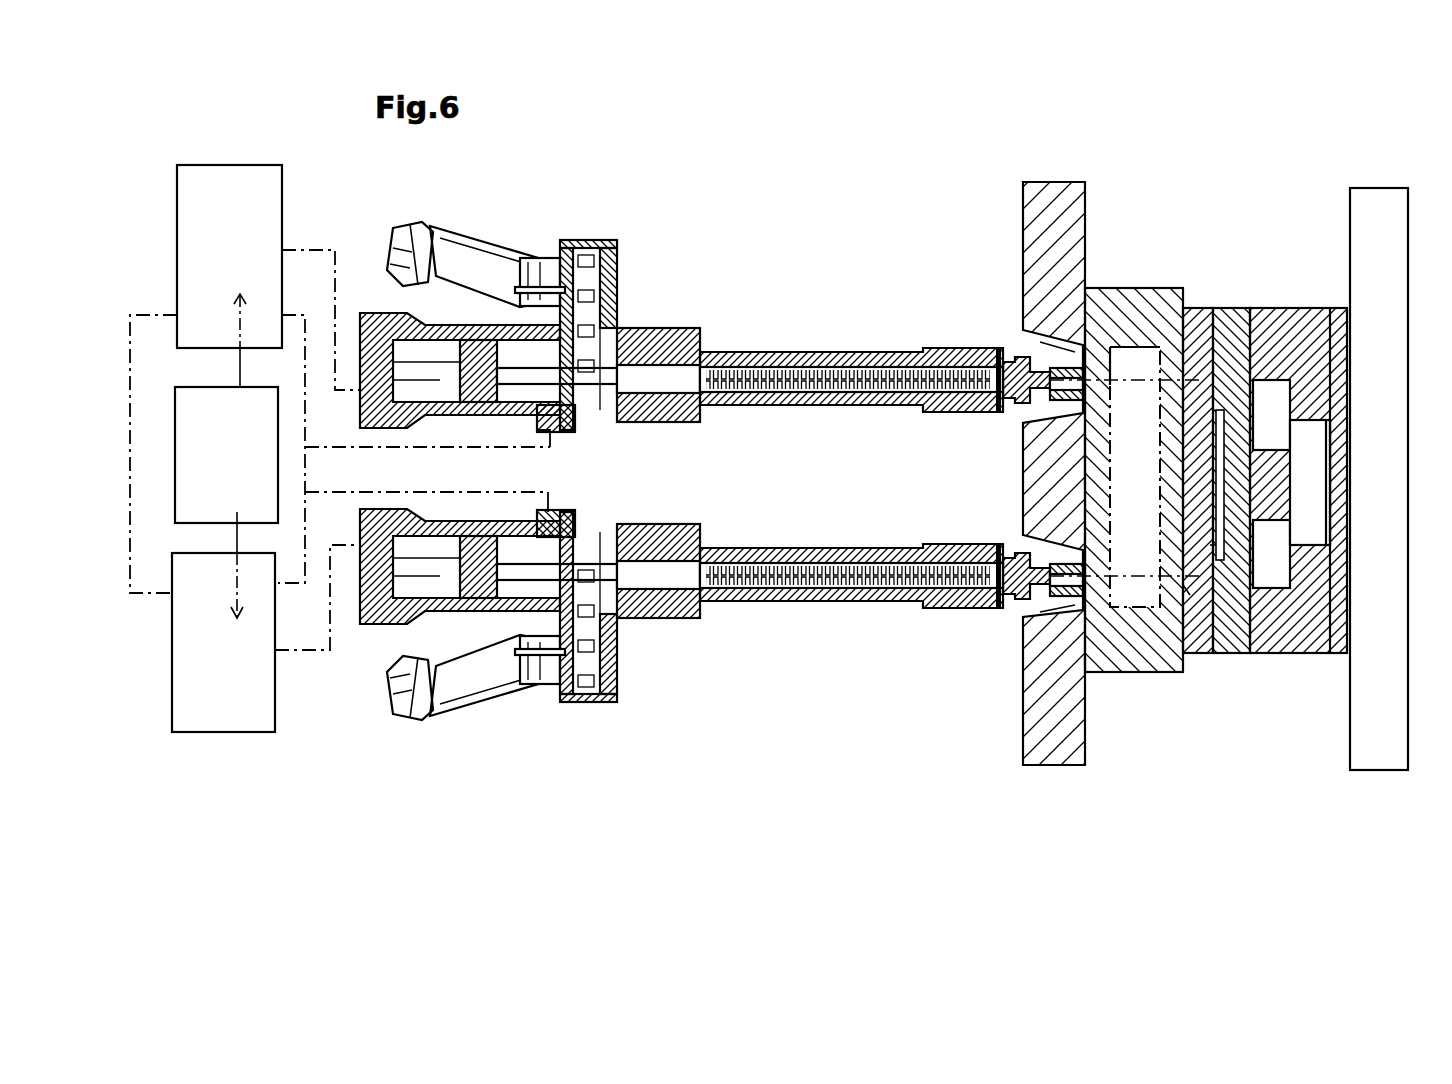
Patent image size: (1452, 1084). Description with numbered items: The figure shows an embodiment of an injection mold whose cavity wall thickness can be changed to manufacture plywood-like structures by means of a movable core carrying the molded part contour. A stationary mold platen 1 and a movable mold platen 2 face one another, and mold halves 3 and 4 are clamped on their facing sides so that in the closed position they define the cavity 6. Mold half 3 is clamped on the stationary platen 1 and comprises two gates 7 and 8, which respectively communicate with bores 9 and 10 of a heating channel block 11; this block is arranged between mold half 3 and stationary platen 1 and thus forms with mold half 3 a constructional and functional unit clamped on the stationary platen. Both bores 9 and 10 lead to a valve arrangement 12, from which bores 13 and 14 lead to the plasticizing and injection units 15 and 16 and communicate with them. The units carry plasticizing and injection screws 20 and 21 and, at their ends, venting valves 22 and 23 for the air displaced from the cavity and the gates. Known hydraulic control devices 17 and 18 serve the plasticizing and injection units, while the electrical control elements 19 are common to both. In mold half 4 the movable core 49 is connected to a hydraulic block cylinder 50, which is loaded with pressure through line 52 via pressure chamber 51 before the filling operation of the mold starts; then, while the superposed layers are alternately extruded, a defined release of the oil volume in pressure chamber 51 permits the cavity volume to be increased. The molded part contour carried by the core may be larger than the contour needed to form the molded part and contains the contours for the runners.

The stationary mold platen 1 is at (1065, 195).
The movable mold platen 2 is at (1378, 208).
The mold half 3 is at (1196, 305).
The mold half 4 is at (1330, 312).
The cavity 6 is at (1216, 565).
The gate 7 is at (1213, 548).
The gate 8 is at (1252, 305).
The bore 9 is at (1223, 305).
The bore 10 is at (1188, 592).
The heating channel block 11 is at (1102, 300).
The valve arrangement 12 is at (1128, 362).
The bore 13 is at (1045, 352).
The bore 14 is at (1030, 622).
The plasticizing and injection unit 15 is at (612, 240).
The plasticizing and injection unit 16 is at (603, 702).
The hydraulic control device 17 is at (222, 697).
The hydraulic control device 18 is at (197, 187).
The electrical control elements 19 is at (188, 470).
The plasticizing and injection screw 20 is at (763, 600).
The plasticizing and injection screw 21 is at (833, 355).
The venting valve 22 is at (1008, 368).
The venting valve 23 is at (1000, 592).
The movable core 49 is at (1290, 310).
The hydraulic block cylinder 50 is at (1302, 532).
The pressure chamber 51 is at (1331, 548).
The line 52 is at (1327, 547).